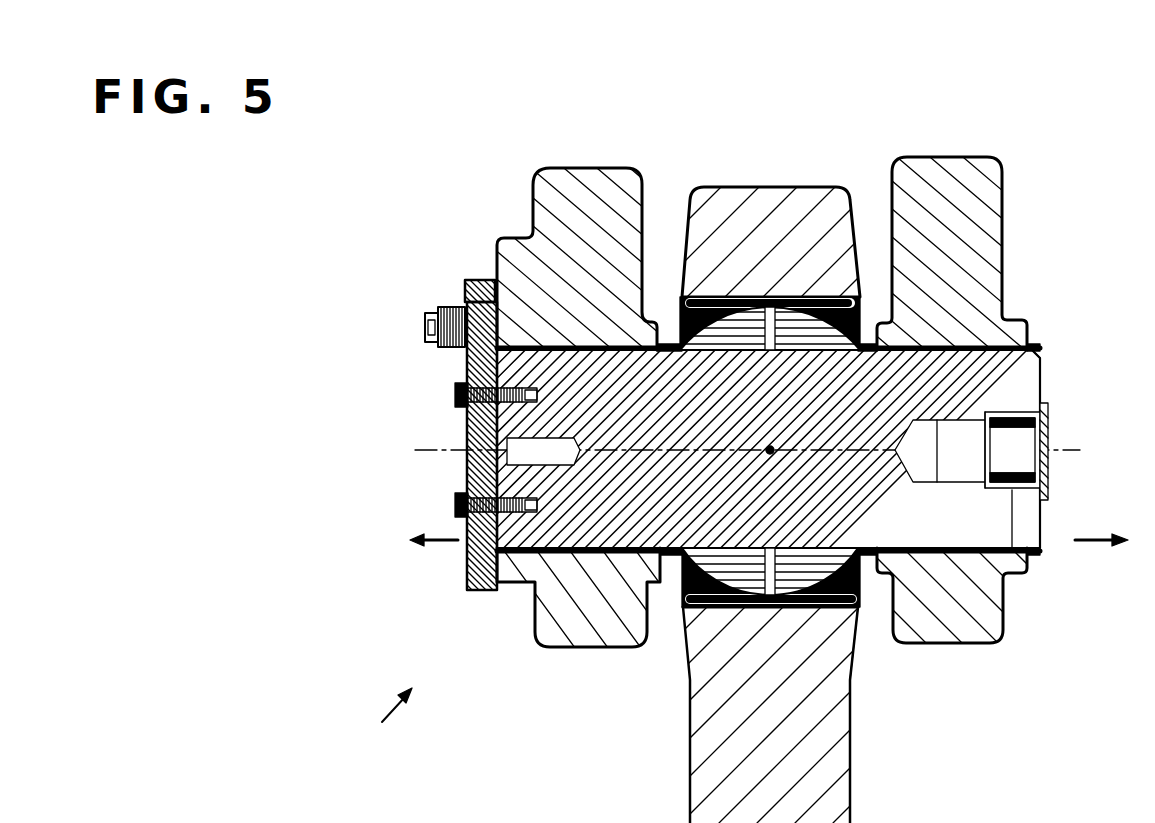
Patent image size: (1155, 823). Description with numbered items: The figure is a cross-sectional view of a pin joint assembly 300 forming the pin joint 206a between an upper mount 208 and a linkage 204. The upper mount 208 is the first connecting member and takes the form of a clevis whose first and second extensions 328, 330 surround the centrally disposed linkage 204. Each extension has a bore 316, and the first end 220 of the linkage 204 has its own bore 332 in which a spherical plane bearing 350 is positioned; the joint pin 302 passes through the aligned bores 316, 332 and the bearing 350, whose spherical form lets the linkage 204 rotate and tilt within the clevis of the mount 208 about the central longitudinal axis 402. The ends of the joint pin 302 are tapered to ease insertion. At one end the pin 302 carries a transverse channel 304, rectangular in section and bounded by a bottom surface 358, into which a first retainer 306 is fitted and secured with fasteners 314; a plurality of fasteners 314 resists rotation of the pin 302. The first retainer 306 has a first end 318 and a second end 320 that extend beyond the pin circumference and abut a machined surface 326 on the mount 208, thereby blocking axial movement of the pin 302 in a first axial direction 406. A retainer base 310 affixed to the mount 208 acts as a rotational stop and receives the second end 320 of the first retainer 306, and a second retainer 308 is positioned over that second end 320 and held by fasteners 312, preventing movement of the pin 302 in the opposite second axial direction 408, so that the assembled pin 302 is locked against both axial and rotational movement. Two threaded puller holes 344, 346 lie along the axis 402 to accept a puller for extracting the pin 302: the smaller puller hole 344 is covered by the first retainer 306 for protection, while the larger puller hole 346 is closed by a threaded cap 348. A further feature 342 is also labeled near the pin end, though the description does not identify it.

The linkage 204 is at (772, 187).
The pin joint 206a is at (1042, 373).
The upper mount 208 is at (912, 157).
The first end of linkage 220 is at (690, 700).
The pin joint assembly 300 is at (379, 718).
The joint pin 302 is at (789, 416).
The channel 304 is at (467, 418).
The first retainer 306 is at (467, 465).
The second retainer 308 is at (450, 308).
The retainer base 310 is at (469, 281).
The fasteners 312 is at (425, 330).
The fasteners 314 is at (457, 508).
The bore 316 is at (595, 557).
The first end of first retainer 318 is at (467, 574).
The second end of first retainer 320 is at (480, 362).
The machined surface 326 is at (493, 252).
The first extension 328 is at (575, 167).
The second extension 330 is at (973, 157).
The bore of linkage first end 332 is at (857, 610).
The axial bore 342 is at (548, 467).
The puller hole 344 is at (468, 546).
The puller hole 346 is at (937, 418).
The threaded cap 348 is at (1048, 478).
The spherical plane bearing 350 is at (687, 568).
The bottom surface 358 is at (482, 372).
The central longitudinal axis 402 is at (1058, 450).
The first axial direction 406 is at (1097, 543).
The second axial direction 408 is at (438, 540).